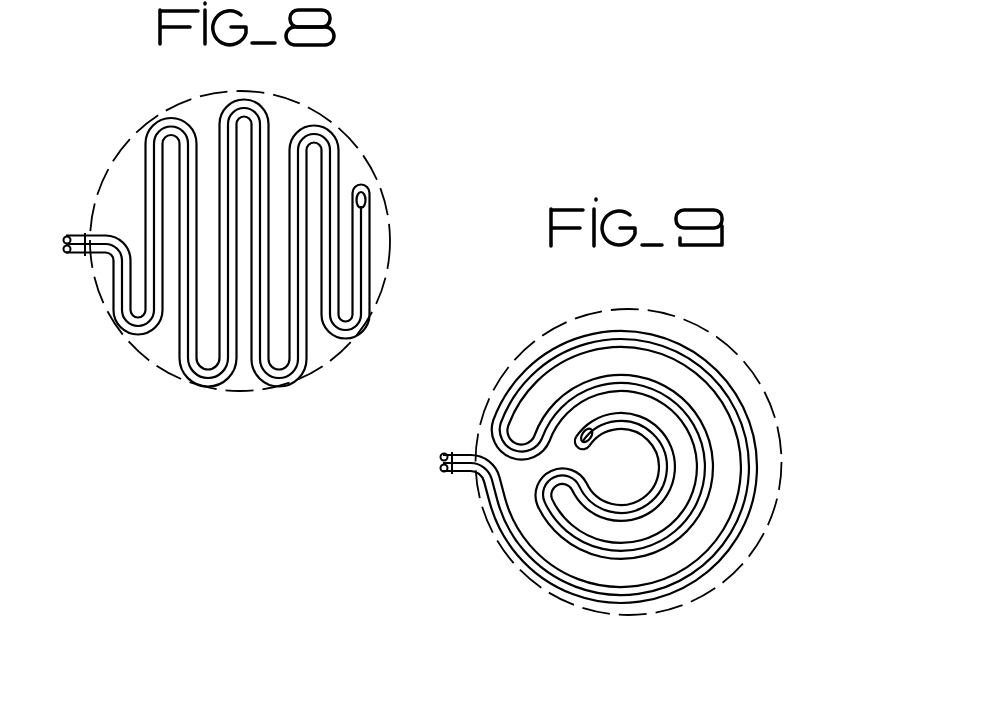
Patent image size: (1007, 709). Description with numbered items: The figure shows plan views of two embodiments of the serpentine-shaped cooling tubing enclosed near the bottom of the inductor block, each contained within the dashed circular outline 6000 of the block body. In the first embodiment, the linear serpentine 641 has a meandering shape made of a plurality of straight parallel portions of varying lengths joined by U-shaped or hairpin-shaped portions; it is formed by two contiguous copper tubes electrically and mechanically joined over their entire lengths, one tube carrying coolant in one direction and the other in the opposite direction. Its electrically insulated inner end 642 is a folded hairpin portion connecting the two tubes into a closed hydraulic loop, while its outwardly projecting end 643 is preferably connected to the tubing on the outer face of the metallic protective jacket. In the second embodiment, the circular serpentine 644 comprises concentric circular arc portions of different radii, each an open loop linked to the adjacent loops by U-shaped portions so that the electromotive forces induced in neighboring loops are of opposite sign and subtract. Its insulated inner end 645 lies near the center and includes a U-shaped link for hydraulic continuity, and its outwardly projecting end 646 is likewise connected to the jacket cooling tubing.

In FIG. 8, the outline of the body 6000 is at (300, 76).
In FIG. 9, the outline of the body 6000 is at (692, 287).
In FIG. 8, the linear serpentine 641 is at (208, 388).
In FIG. 8, the inner end of the serpentine tubing 642 is at (366, 186).
In FIG. 8, the outwardly projecting end of the serpentine tubing 643 is at (78, 256).
In FIG. 9, the circular serpentine 644 is at (586, 598).
In FIG. 9, the inner end of the circular serpentine 645 is at (594, 455).
In FIG. 9, the outwardly projecting end of the circular serpentine 646 is at (453, 473).